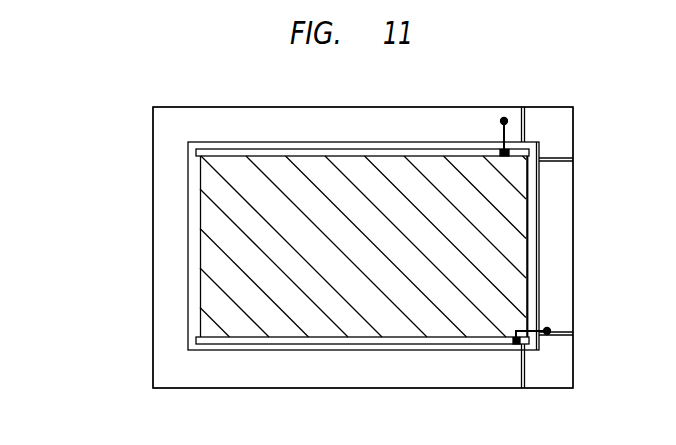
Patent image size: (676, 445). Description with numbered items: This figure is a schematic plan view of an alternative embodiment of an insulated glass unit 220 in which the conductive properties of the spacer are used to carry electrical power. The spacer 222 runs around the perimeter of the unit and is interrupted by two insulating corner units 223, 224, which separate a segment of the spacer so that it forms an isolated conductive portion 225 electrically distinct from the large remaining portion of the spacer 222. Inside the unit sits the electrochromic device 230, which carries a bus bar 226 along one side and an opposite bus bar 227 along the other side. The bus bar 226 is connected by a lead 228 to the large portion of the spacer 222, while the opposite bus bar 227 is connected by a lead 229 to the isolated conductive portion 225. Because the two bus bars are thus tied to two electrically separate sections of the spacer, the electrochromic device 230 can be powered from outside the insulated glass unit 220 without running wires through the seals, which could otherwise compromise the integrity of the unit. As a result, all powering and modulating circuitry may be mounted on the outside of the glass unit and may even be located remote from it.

The insulated glass unit 220 is at (114, 87).
The spacer 222 is at (170, 325).
The insulating corner unit 223 is at (565, 130).
The insulating corner unit 224 is at (565, 373).
The isolated conductive portion 225 is at (565, 260).
The bus bar 226 is at (378, 149).
The opposite bus bar 227 is at (451, 344).
The lead 228 is at (500, 140).
The lead 229 is at (543, 323).
The electrochromic device 230 is at (217, 248).